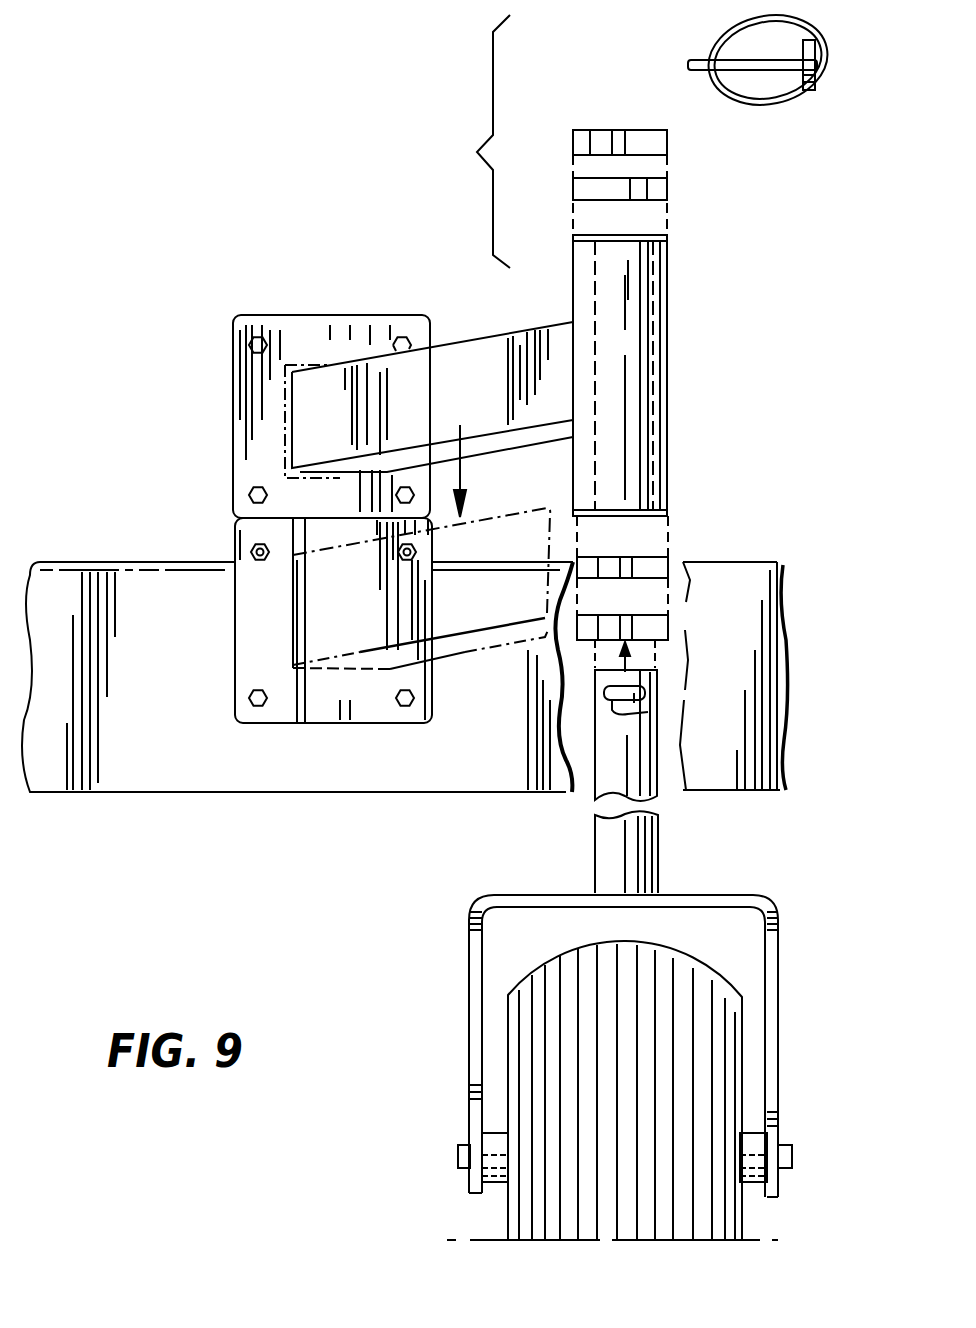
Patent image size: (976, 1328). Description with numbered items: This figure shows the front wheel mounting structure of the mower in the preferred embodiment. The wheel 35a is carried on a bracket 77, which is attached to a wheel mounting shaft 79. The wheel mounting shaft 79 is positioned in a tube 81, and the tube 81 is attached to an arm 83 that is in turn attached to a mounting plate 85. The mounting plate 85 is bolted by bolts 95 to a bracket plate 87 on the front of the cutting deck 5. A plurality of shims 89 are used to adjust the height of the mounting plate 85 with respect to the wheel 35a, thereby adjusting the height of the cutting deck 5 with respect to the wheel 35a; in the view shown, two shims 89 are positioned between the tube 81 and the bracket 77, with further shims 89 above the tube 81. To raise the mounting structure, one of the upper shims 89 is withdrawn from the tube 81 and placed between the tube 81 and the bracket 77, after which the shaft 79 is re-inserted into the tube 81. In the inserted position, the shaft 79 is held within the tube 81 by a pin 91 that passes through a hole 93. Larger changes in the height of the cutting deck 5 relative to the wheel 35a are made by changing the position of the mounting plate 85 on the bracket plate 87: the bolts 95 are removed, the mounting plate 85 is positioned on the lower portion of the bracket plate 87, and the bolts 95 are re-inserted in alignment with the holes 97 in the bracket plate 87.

The cutting deck 5 is at (94, 562).
The wheel 35a is at (548, 1188).
The bracket 77 is at (472, 992).
The wheel mounting shaft 79 is at (602, 852).
The tube 81 is at (668, 412).
The arm 83 is at (492, 352).
The mounting plate 85 is at (324, 330).
The bracket plate 87 is at (234, 666).
The shims 89 is at (645, 132).
The pin 91 is at (764, 72).
The hole 93 is at (650, 712).
The bolts 95 is at (245, 338).
The holes 97 is at (264, 560).